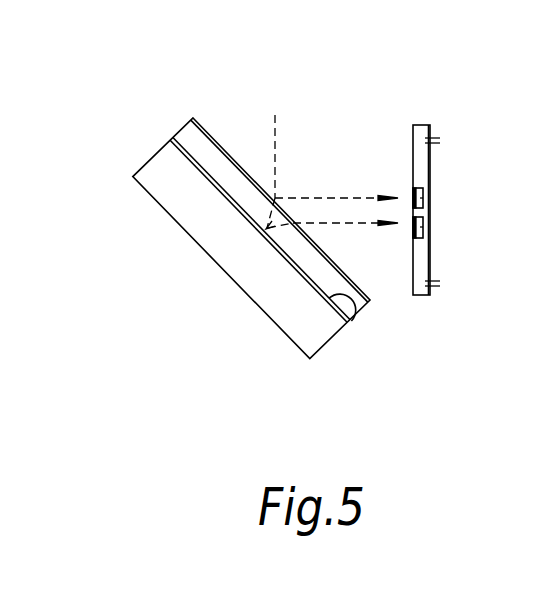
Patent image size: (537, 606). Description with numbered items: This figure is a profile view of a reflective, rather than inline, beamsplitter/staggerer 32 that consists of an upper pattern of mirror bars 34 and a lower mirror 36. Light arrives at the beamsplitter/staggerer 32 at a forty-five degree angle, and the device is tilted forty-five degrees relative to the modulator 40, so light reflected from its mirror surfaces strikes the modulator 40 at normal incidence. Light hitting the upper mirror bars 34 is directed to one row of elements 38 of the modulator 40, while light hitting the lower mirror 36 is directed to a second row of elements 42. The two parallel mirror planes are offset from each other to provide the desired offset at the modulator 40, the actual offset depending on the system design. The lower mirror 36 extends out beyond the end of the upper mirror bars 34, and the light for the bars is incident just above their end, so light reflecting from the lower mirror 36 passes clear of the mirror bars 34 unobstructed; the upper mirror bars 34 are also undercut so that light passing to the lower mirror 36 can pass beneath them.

The reflective beamsplitter/staggerer 32 is at (195, 295).
The upper mirror bars 34 is at (212, 136).
The lower mirror 36 is at (356, 312).
The one row of elements 38 is at (424, 198).
The modulator 40 is at (382, 133).
The second row of elements 42 is at (424, 227).